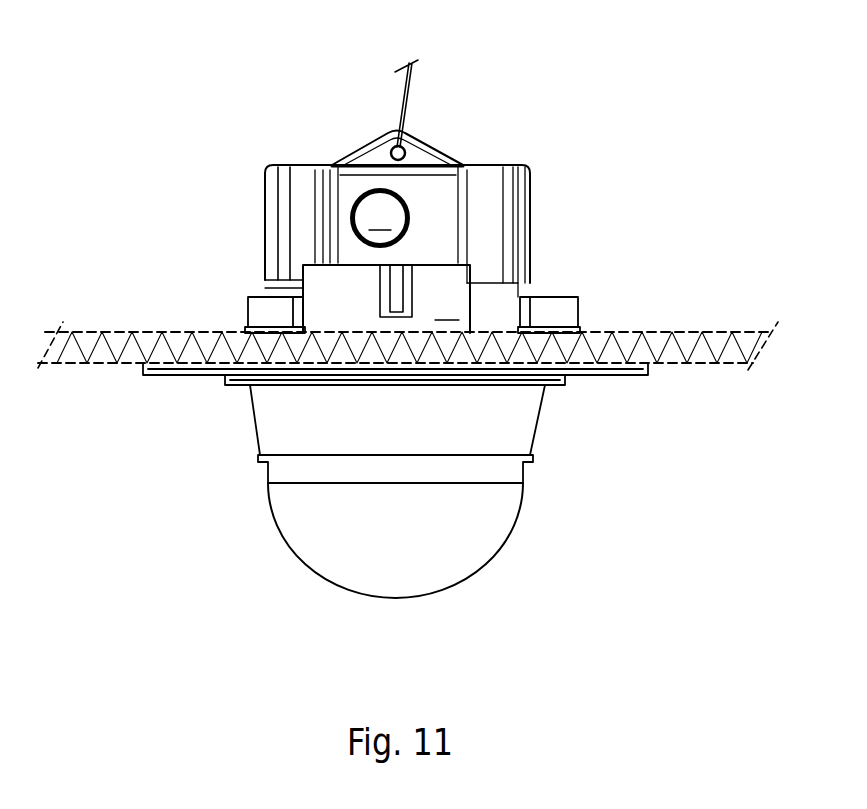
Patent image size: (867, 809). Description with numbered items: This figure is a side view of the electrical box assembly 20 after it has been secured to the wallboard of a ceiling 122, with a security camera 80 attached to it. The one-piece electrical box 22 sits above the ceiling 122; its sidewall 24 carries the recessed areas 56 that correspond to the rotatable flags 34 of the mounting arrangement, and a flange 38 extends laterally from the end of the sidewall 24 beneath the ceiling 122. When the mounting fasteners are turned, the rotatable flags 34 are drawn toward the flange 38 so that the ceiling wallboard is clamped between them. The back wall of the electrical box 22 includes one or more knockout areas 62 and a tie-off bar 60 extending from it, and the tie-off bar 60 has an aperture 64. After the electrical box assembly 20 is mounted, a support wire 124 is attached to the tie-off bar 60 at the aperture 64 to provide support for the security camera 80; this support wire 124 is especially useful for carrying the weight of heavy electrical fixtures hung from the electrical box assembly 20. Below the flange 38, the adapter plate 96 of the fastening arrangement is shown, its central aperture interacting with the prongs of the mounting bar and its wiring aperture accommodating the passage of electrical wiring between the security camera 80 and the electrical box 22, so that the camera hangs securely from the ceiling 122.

The electrical box assembly 20 is at (226, 138).
The electrical box 22 is at (522, 200).
The sidewall 24 is at (386, 299).
The rotatable flags 34 is at (257, 307).
The flange 38 is at (648, 373).
The recessed area 56 is at (287, 213).
The tie-off bar 60 is at (430, 148).
The knockout areas 62 is at (380, 218).
The aperture 64 is at (390, 152).
The security camera 80 is at (250, 420).
The adapter plate 96 is at (548, 387).
The ceiling 122 is at (663, 343).
The support wire 124 is at (407, 95).